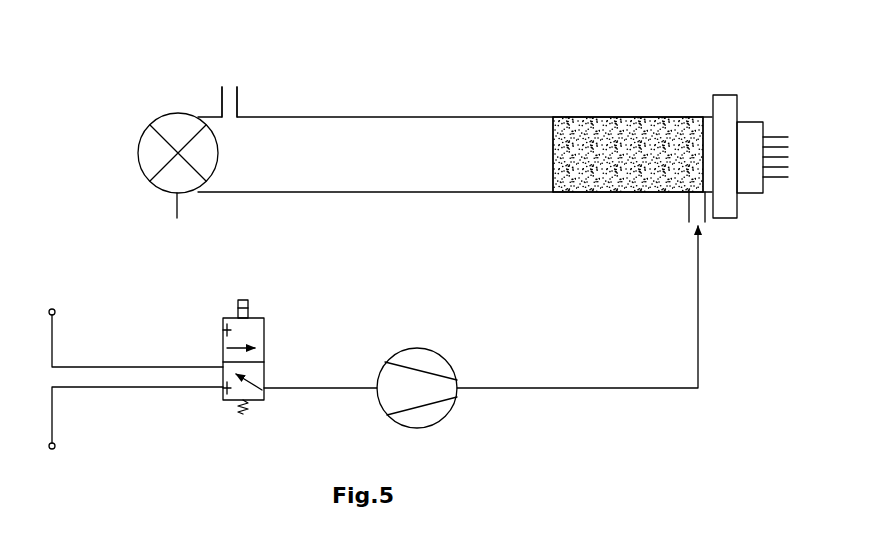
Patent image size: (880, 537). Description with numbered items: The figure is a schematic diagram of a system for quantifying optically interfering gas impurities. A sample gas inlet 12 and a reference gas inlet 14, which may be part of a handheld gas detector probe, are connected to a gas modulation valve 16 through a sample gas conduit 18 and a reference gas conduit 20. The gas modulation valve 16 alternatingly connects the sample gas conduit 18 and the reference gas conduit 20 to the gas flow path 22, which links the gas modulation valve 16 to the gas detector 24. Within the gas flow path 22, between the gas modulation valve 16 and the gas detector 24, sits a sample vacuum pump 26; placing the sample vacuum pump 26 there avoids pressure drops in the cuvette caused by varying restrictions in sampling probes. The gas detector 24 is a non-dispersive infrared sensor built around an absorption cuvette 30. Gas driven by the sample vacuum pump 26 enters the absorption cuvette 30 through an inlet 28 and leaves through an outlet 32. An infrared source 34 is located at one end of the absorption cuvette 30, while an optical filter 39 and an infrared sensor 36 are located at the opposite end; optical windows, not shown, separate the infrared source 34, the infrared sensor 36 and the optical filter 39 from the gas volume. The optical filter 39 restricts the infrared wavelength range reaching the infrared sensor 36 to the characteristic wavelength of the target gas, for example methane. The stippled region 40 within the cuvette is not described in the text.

The sample gas inlet 12 is at (53, 449).
The reference gas inlet 14 is at (53, 308).
The gas modulation valve 16 is at (282, 354).
The sample gas conduit 18 is at (120, 389).
The reference gas conduit 20 is at (118, 367).
The gas flow path 22 is at (305, 390).
The gas detector 24 is at (494, 220).
The sample vacuum pump 26 is at (425, 360).
The inlet 28 is at (689, 212).
The absorption cuvette 30 is at (395, 117).
The outlet 32 is at (220, 95).
The infrared source 34 is at (148, 150).
The infrared sensor 36 is at (747, 135).
The optical filter 39 is at (722, 108).
The catalyst material 40 is at (608, 127).